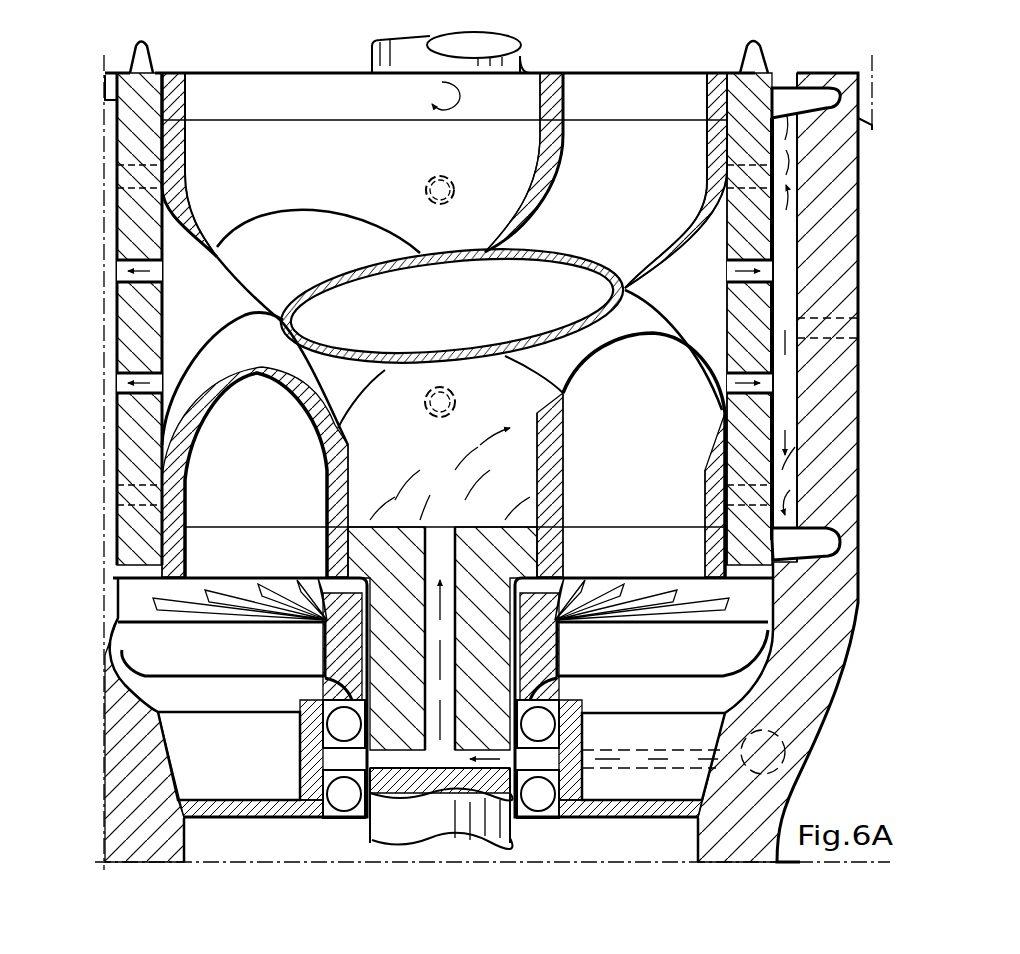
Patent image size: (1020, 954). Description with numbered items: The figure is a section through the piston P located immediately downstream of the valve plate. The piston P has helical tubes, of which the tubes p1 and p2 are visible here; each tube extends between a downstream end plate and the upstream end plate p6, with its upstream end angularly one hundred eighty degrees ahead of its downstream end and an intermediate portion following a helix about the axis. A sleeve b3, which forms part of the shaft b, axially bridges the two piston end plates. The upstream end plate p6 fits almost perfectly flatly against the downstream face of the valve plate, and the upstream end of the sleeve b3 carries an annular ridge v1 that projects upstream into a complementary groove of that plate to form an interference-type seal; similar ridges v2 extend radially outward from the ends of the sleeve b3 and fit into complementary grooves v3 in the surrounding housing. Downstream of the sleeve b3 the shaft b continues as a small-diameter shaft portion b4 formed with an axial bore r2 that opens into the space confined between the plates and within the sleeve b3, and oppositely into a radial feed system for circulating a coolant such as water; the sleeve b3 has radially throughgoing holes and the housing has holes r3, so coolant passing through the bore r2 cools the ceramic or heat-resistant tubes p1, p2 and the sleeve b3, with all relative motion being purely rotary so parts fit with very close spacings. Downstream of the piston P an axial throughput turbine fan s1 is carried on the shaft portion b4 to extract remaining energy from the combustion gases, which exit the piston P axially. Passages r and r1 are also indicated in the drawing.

The piston P is at (600, 52).
The shaft b is at (402, 104).
The sleeve b3 is at (730, 310).
The small-diameter shaft portion b4 is at (390, 815).
The tube p1 is at (345, 170).
The tube p2 is at (705, 180).
The upstream end plate p6 is at (665, 85).
The annular return channel r is at (774, 228).
The return passage r1 is at (636, 768).
The axial bore r2 is at (437, 540).
The holes r3 is at (864, 318).
The axial throughput turbine fan s1 is at (666, 665).
The annular ridge v1 is at (762, 46).
The ridges v2 is at (806, 96).
The grooves v3 is at (836, 88).